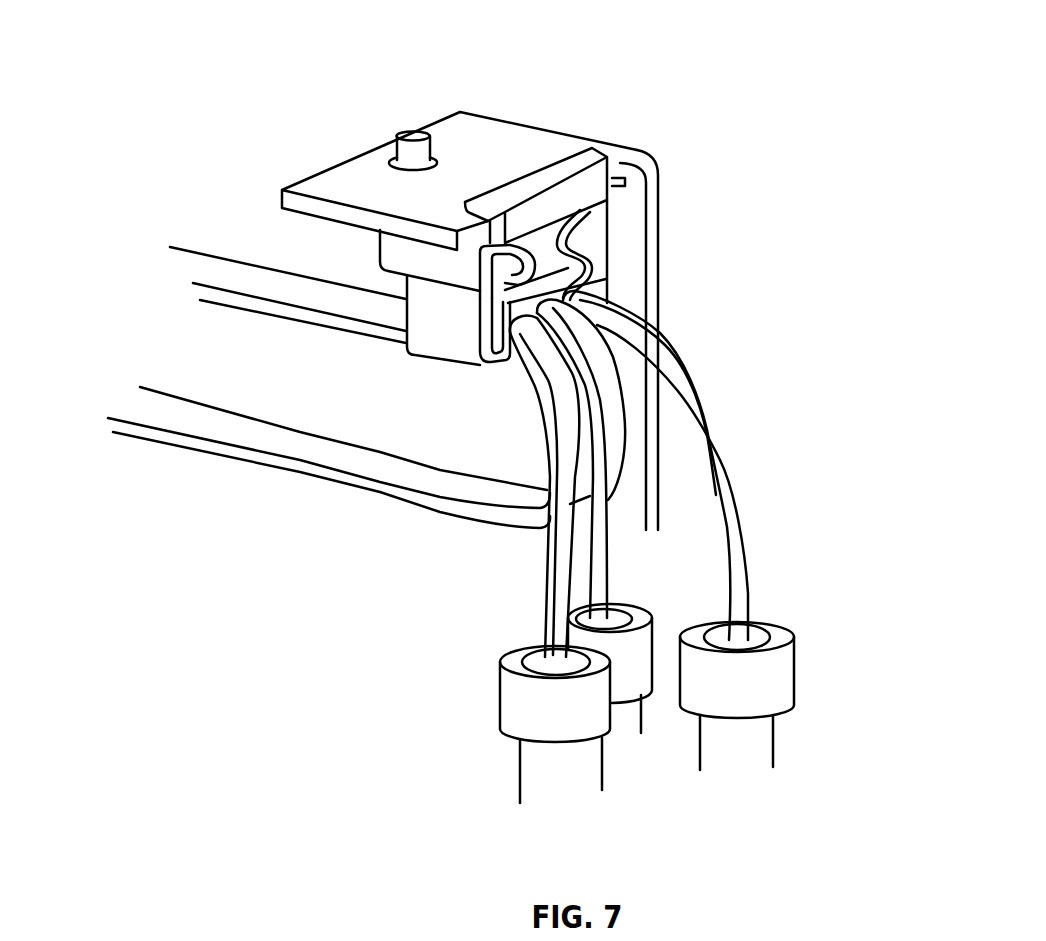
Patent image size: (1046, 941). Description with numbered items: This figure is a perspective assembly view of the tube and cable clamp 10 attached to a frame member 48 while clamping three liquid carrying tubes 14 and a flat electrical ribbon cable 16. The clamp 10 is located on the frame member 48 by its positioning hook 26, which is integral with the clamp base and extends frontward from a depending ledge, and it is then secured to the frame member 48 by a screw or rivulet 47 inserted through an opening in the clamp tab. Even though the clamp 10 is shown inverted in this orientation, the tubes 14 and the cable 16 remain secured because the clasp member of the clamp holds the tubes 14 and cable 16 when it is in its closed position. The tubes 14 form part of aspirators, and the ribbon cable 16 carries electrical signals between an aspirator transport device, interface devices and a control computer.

The tube and cable clamp 10 is at (619, 230).
The liquid carrying tubes 14 is at (680, 387).
The flat electrical ribbon cable 16 is at (218, 272).
The positioning hook 26 is at (567, 165).
The rivulet 47 is at (408, 130).
The frame member 48 is at (348, 190).